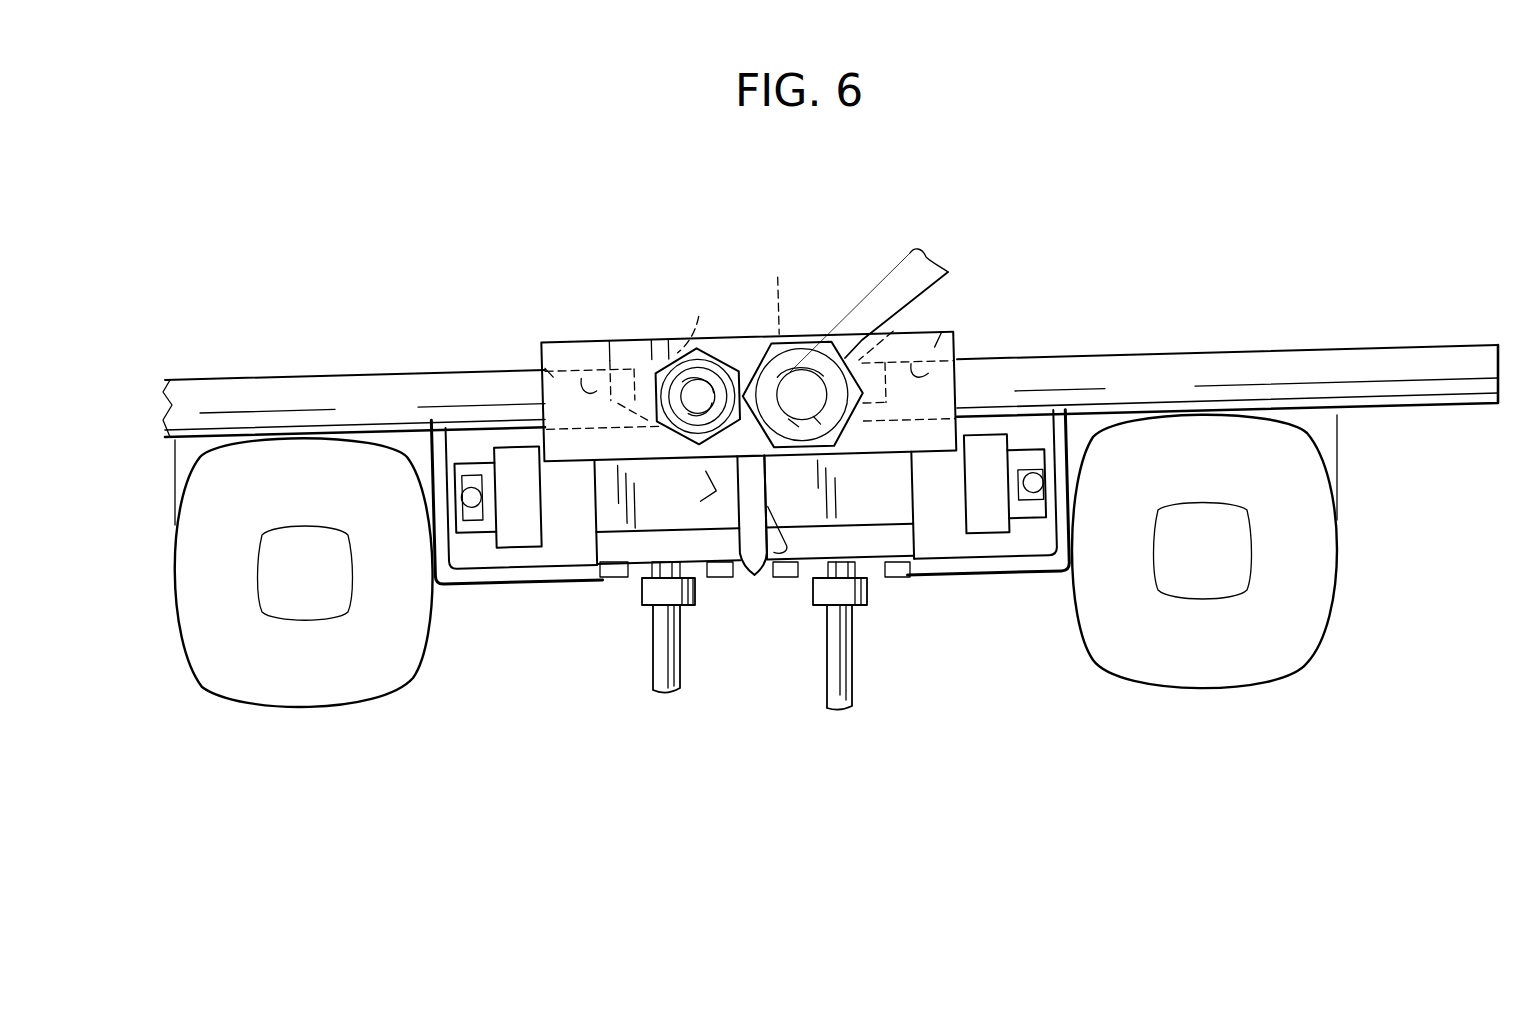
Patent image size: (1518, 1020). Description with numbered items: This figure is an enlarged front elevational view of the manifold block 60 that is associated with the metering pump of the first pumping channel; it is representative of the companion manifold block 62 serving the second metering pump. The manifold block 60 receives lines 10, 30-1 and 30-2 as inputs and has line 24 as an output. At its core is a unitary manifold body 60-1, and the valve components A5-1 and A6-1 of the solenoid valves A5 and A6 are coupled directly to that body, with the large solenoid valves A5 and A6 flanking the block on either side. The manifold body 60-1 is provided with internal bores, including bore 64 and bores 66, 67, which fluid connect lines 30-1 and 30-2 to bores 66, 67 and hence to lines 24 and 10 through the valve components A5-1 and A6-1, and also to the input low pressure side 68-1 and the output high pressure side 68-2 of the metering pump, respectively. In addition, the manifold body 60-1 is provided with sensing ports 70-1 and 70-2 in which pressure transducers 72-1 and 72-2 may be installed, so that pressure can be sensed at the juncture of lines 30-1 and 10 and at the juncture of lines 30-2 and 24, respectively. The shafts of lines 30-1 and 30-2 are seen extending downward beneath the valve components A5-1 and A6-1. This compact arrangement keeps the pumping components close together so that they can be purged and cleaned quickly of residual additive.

The manifold block 60 is at (566, 287).
The unitary manifold body 60-1 is at (594, 356).
The manifold block 62 is at (655, 436).
The internal bore 64 is at (858, 440).
The internal bore 66 is at (720, 356).
The internal bore 67 is at (860, 346).
The input (low pressure) side of metering pump 68-1 is at (703, 310).
The output (high pressure) side of metering pump 68-2 is at (772, 252).
The line 10 is at (852, 281).
The sensing port 70-1 is at (542, 363).
The sensing port 70-2 is at (958, 338).
The pressure transducer 72-1 is at (412, 410).
The pressure transducer 72-2 is at (1185, 398).
The line 24 is at (675, 535).
The line 30-1 is at (660, 660).
The line 30-2 is at (848, 650).
The solenoid valve A5 is at (312, 680).
The solenoid valve A6 is at (1222, 640).
The valve component A5-1 is at (702, 505).
The valve component A6-1 is at (886, 501).